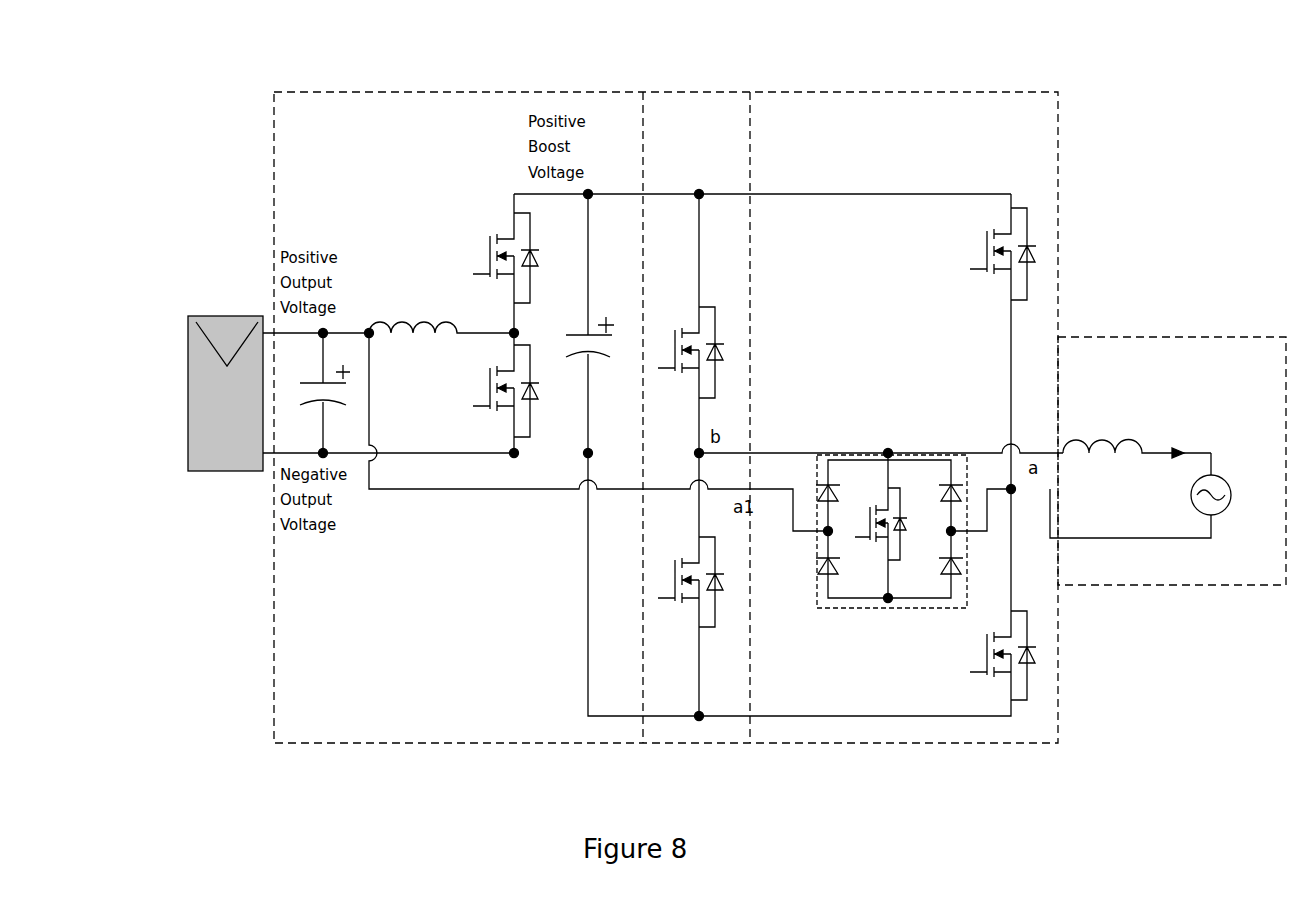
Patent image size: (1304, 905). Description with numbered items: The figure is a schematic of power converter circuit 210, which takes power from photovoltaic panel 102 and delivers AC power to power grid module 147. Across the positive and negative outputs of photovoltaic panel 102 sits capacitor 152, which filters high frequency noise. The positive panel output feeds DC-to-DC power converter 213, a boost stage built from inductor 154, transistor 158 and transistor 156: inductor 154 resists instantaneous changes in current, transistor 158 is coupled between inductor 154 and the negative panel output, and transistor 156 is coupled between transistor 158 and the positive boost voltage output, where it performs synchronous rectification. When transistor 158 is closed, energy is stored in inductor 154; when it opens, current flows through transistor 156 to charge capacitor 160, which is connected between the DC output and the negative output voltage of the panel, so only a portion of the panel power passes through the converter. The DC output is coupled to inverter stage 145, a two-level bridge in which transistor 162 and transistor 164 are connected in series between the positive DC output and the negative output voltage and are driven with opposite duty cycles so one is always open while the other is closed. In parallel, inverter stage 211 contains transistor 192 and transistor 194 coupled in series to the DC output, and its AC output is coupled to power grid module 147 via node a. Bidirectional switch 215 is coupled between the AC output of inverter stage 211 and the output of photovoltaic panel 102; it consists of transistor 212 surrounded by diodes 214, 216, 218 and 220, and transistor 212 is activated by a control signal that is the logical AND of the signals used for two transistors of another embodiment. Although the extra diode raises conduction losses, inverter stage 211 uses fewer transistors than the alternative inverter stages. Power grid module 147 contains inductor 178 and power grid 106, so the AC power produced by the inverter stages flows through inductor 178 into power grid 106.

The power converter circuit 210 is at (190, 130).
The photovoltaic panel 102 is at (188, 398).
The capacitor 152 is at (293, 392).
The inductor 154 is at (440, 318).
The transistor 156 is at (493, 217).
The transistor 158 is at (487, 415).
The capacitor 160 is at (574, 368).
The transistor 162 is at (683, 375).
The transistor 164 is at (680, 612).
The transistor 192 is at (995, 285).
The transistor 194 is at (968, 651).
The transistor 212 is at (880, 549).
The diode 214 is at (822, 481).
The bidirectional switch 215 is at (887, 549).
The diode 216 is at (824, 567).
The diode 218 is at (938, 495).
The diode 220 is at (958, 562).
The inductor 178 is at (1109, 458).
The power grid 106 is at (1220, 479).
The DC-to-DC power converter 213 is at (527, 417).
The inverter stage 145 is at (705, 417).
The inverter stage 211 is at (792, 117).
The power grid module 147 is at (1172, 461).